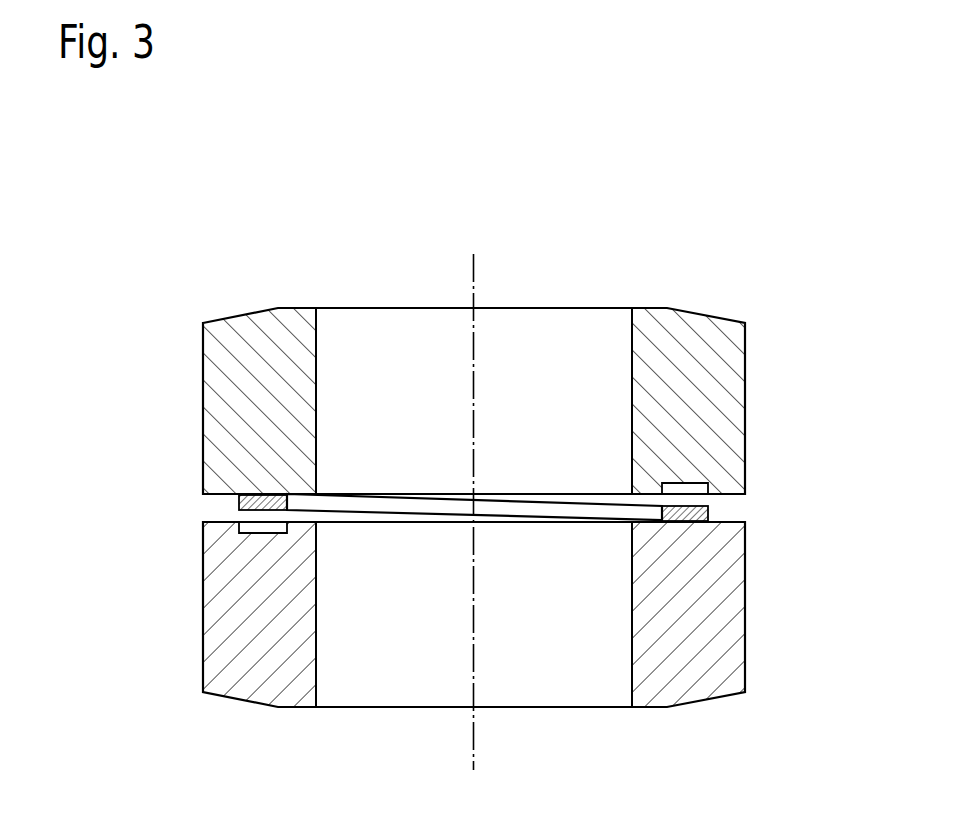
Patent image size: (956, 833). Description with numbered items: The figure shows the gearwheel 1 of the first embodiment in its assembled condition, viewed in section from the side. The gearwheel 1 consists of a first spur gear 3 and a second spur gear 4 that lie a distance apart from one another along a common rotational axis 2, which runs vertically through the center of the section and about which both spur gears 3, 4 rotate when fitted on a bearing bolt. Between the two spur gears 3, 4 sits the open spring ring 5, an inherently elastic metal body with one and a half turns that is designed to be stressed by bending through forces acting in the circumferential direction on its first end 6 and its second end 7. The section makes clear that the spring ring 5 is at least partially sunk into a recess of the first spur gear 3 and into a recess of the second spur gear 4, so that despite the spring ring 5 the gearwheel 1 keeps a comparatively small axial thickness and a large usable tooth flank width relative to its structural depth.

The gearwheel 1 is at (264, 214).
The rotational axis 2 is at (474, 335).
The first spur gear 3 is at (273, 675).
The second spur gear 4 is at (233, 362).
The spring ring 5 is at (363, 507).
The first end 6 is at (270, 527).
The second end 7 is at (683, 490).